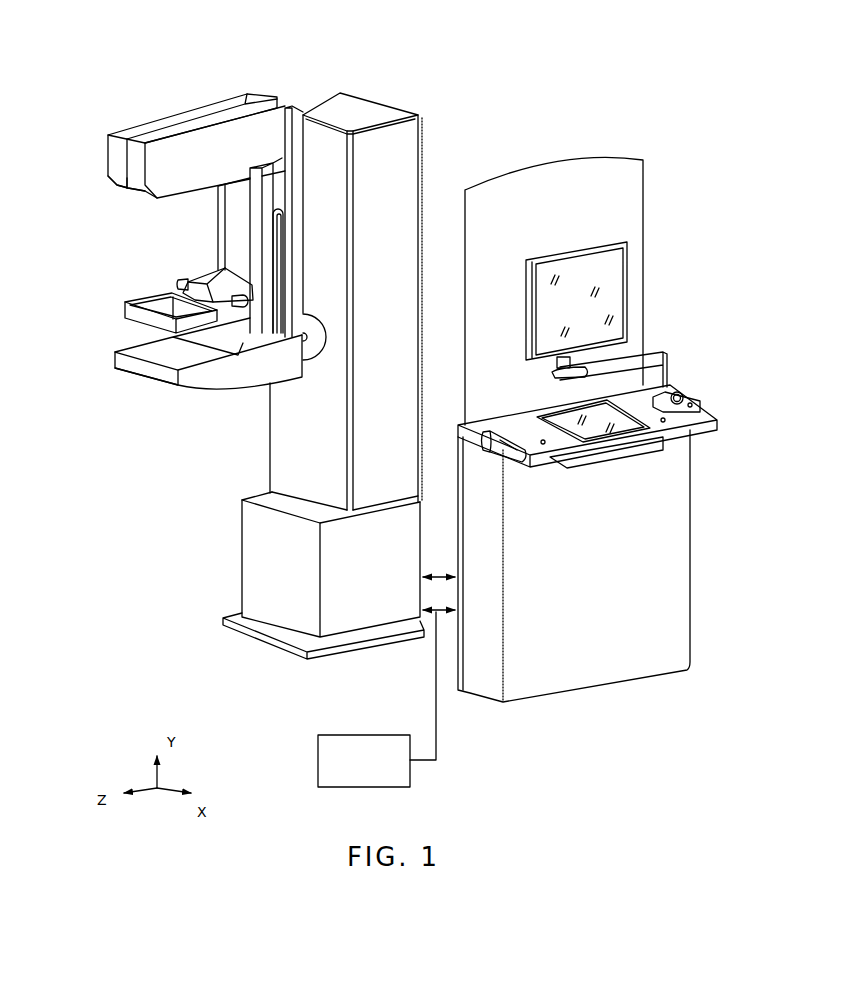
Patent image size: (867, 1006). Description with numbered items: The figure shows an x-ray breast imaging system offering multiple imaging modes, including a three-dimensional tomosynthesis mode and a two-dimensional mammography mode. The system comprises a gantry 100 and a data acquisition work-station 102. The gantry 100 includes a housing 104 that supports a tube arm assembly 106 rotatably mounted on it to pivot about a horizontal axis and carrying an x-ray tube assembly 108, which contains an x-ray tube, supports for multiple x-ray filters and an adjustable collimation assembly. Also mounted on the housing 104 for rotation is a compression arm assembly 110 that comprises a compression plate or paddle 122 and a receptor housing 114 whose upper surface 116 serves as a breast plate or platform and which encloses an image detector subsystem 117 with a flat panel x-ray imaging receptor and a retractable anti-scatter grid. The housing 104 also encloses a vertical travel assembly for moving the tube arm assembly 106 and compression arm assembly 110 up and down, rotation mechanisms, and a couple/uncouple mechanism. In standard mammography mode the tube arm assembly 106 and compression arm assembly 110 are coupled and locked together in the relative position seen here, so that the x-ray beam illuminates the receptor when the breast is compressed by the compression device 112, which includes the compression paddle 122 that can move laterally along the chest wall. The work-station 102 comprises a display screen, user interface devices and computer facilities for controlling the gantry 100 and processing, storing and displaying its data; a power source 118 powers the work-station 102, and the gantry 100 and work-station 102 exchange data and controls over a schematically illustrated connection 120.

The gantry 100 is at (387, 48).
The data acquisition work-station 102 is at (596, 147).
The housing 104 is at (406, 106).
The tube arm assembly 106 is at (280, 89).
The x-ray tube assembly 108 is at (131, 199).
The compression arm assembly 110 is at (85, 290).
The compression device 112 is at (164, 271).
The receptor housing 114 is at (114, 357).
The upper surface 116 is at (129, 341).
The image detector subsystem 117 is at (238, 400).
The power source 118 is at (318, 762).
The connection 120 is at (432, 577).
The compression paddle 122 is at (137, 297).